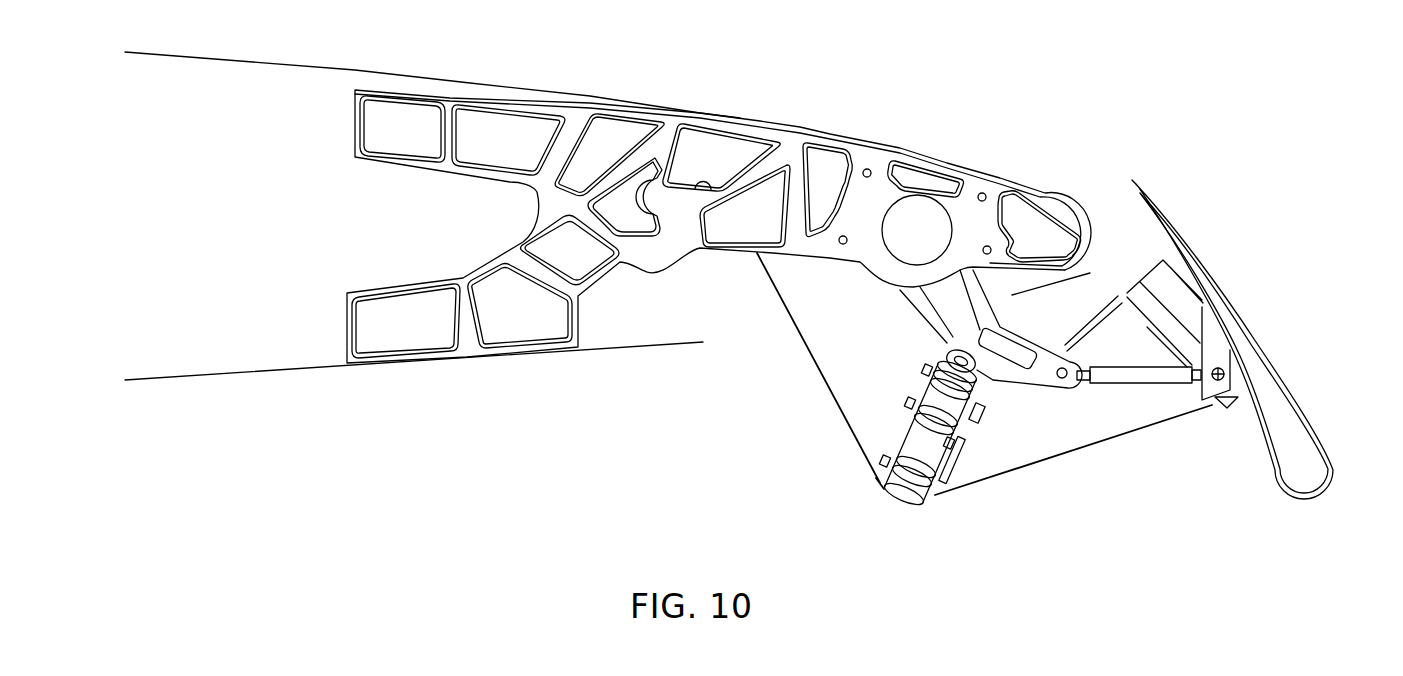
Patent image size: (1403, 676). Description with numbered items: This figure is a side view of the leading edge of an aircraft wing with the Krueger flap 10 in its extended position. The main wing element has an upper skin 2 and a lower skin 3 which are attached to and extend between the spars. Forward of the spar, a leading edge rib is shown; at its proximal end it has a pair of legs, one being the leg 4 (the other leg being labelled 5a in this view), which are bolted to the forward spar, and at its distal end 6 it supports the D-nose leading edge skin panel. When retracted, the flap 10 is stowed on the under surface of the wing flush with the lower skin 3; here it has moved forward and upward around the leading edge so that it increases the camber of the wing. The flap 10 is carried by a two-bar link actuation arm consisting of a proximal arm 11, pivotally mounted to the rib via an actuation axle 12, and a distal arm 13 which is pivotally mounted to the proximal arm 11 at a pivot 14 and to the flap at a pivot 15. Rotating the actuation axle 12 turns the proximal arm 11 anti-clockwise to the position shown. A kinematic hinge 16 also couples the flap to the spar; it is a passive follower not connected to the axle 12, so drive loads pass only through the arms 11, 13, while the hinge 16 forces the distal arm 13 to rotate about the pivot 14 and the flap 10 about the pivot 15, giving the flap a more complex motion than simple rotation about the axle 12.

The upper skin 2 is at (322, 67).
The lower skin 3 is at (160, 383).
The leg 4 is at (355, 122).
The lower arm cell of support frame 5a is at (348, 325).
The distal end 6 is at (1058, 200).
The Krueger flap 10 is at (1318, 408).
The proximal arm 11 is at (915, 303).
The actuation axle 12 is at (920, 232).
The distal arm 13 is at (1150, 378).
The pivot 14 is at (1063, 379).
The pivot 15 is at (1220, 372).
The kinematic hinge 16 is at (846, 506).